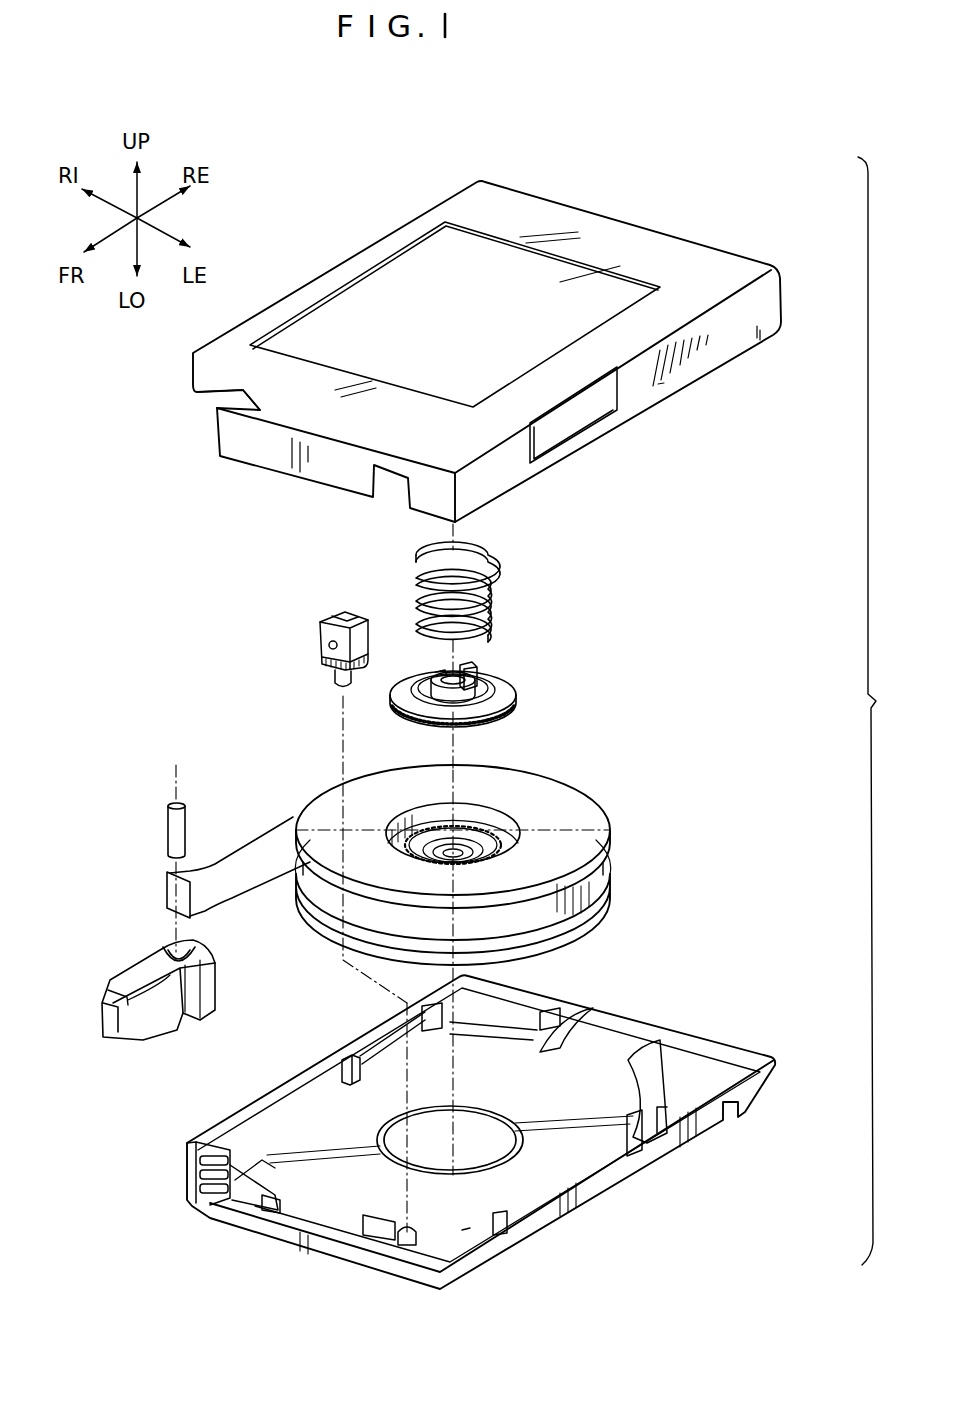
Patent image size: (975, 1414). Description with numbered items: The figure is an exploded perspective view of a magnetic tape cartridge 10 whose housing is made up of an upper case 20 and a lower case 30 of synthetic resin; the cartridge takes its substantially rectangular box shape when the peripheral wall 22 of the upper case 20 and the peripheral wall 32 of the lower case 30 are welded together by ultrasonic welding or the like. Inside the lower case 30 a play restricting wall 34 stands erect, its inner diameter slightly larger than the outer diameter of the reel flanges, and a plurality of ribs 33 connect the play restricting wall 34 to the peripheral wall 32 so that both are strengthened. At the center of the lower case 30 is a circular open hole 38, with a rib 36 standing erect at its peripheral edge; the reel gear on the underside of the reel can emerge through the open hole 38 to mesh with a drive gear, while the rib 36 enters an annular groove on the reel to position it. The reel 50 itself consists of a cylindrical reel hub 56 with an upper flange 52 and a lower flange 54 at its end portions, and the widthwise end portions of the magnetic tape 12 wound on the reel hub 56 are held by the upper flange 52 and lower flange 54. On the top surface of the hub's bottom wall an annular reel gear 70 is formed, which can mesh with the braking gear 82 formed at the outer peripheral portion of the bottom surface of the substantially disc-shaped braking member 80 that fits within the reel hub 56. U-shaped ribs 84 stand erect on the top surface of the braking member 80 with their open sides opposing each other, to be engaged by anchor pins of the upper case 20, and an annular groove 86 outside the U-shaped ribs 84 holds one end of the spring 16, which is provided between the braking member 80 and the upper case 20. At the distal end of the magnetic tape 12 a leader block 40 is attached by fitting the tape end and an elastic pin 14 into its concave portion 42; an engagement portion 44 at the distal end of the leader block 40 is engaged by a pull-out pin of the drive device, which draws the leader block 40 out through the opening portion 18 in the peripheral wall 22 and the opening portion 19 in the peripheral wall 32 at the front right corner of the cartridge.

The magnetic tape cartridge 10 is at (749, 222).
The magnetic tape 12 is at (258, 866).
The elastic pin 14 is at (168, 828).
The spring 16 is at (482, 556).
The opening portion 18 is at (207, 400).
The opening portion 19 is at (197, 1197).
The upper case 20 is at (786, 300).
The peripheral wall 22 is at (657, 387).
The lower case 30 is at (763, 1097).
The peripheral wall 32 is at (603, 1190).
The ribs 33 is at (573, 1013).
The play restricting wall 34 is at (607, 1063).
The rib 36 is at (385, 1140).
The open hole 38 is at (500, 1117).
The leader block 40 is at (159, 1031).
The concave portion 42 is at (205, 992).
The engagement portion 44 is at (112, 990).
The reel 50 is at (613, 858).
The upper flange 52 is at (597, 818).
The lower flange 54 is at (578, 938).
The reel hub 56 is at (472, 815).
The reel gear 70 is at (485, 838).
The braking member 80 is at (522, 703).
The braking gear 82 is at (418, 729).
The U-shaped ribs 84 is at (428, 690).
The annular groove 86 is at (517, 686).